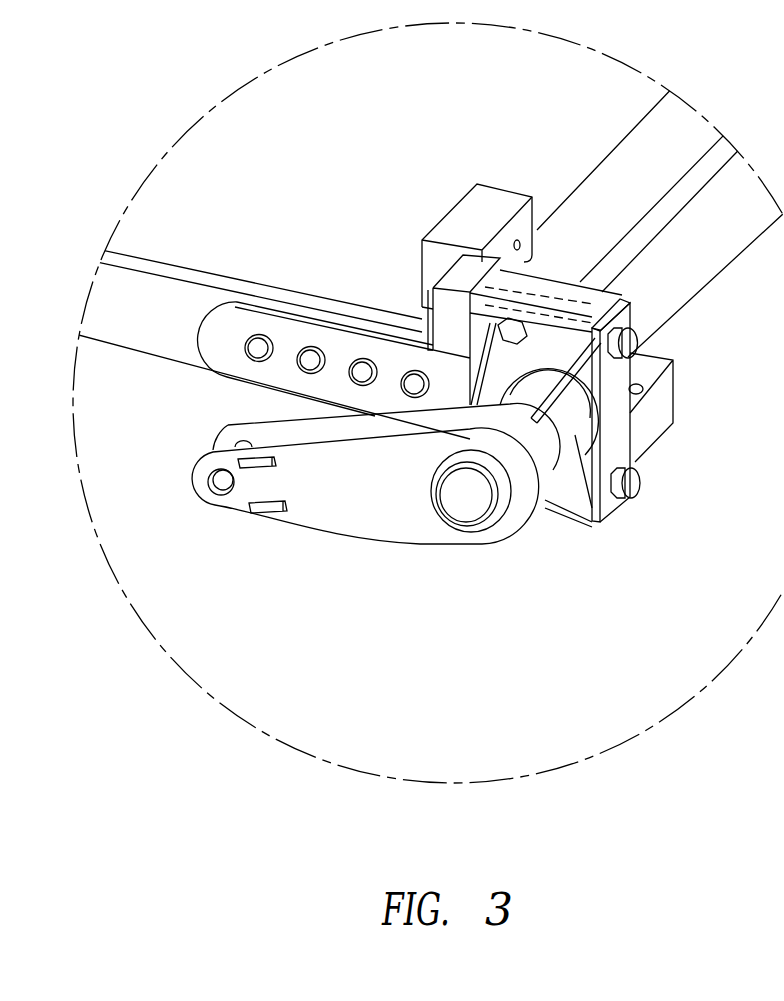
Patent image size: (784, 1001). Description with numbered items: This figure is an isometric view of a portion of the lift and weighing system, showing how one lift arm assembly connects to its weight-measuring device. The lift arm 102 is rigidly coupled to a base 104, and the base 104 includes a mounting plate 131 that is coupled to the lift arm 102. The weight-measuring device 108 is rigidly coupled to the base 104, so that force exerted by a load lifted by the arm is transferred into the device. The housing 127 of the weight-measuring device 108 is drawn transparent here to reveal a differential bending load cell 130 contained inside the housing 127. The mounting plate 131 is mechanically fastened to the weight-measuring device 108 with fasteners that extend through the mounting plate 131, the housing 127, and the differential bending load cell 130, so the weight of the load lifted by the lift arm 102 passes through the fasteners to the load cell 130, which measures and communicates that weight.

The lift arm 102 is at (141, 330).
The base 104 is at (450, 323).
The housing 127 is at (562, 282).
The mounting plate 131 is at (437, 270).
The weight-measuring device 108 is at (575, 518).
The differential bending load cell 130 is at (620, 358).